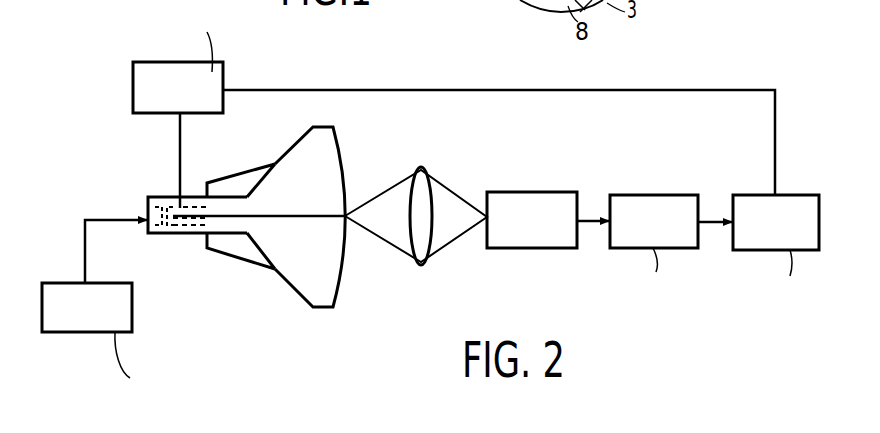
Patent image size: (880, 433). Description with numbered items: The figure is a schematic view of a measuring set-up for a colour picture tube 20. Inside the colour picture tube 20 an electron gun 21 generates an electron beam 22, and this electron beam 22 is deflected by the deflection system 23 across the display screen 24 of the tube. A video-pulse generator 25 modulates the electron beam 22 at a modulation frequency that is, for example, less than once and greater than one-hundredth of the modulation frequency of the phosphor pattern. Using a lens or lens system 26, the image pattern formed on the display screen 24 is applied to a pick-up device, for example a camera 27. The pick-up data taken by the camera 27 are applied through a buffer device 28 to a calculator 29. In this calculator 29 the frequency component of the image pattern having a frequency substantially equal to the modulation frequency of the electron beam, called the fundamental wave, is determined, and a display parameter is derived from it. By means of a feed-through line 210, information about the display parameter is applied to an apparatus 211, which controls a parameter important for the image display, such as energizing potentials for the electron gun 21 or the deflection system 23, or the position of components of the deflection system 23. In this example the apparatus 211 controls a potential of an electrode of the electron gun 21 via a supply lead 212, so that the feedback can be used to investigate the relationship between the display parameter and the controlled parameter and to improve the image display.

The colour picture tube 20 is at (270, 253).
The electron gun 21 is at (185, 234).
The electron beam 22 is at (315, 216).
The deflection system 23 is at (243, 257).
The display screen 24 is at (345, 280).
The video-pulse generator 25 is at (62, 290).
The lens system 26 is at (422, 198).
The camera 27 is at (537, 197).
The buffer device 28 is at (647, 195).
The calculator 29 is at (798, 195).
The feed-through line 210 is at (686, 92).
The apparatus 211 is at (143, 93).
The supply lead 212 is at (180, 147).